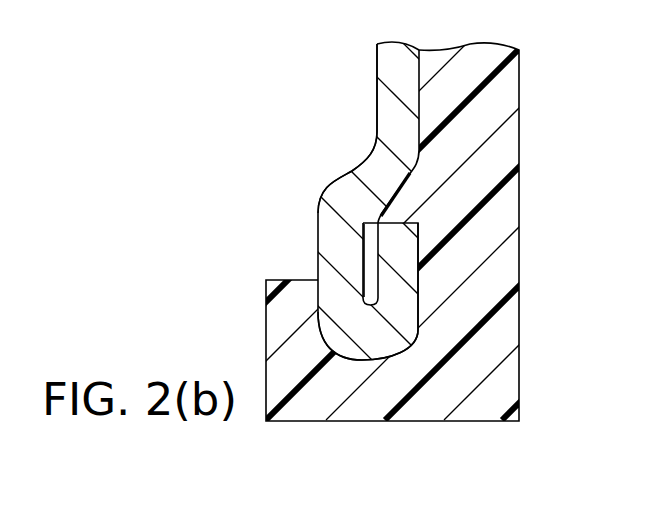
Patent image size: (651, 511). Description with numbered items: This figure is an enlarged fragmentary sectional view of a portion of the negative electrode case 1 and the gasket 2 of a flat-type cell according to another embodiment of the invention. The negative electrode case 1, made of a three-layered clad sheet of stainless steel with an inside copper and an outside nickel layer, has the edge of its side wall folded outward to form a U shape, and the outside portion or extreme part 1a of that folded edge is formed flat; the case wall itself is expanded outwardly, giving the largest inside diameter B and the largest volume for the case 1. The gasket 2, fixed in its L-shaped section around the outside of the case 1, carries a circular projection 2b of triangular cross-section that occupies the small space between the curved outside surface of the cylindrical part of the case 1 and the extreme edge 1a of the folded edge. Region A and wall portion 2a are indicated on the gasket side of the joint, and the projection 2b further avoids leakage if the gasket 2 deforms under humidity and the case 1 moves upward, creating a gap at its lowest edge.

The negative electrode case 1 is at (333, 234).
The extreme part of the folded edge 1a is at (328, 197).
The gasket 2 is at (503, 84).
The groove side wall 2a is at (420, 270).
The circular projection 2b is at (397, 205).
The head portion of sealing strip A is at (301, 247).
The inside diameter B is at (360, 97).